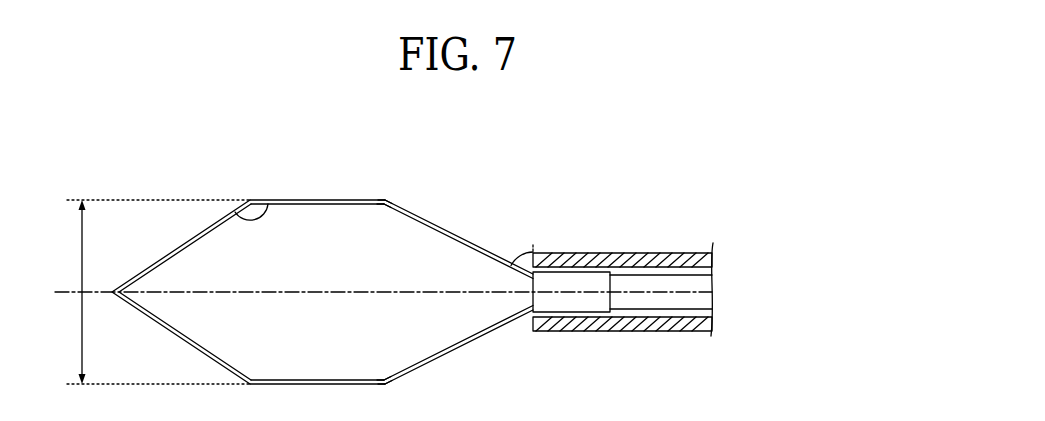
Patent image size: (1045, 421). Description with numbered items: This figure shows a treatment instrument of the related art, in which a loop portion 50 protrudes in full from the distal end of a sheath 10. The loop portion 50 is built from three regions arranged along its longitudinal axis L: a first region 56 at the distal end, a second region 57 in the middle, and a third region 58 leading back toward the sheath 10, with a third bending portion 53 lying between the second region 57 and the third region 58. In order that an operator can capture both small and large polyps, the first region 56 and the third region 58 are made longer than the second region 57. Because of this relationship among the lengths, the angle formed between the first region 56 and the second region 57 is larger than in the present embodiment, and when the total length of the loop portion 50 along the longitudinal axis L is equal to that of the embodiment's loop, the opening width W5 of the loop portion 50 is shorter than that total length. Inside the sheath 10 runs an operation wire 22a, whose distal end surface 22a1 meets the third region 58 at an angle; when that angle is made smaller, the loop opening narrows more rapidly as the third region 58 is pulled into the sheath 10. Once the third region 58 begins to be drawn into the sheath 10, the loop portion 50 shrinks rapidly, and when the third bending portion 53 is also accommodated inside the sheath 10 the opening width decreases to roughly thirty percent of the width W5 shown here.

The sheath 10 is at (681, 253).
The operation wire 22a is at (675, 303).
The distal end surface of operation wire 22a1 is at (530, 315).
The loop portion 50 is at (322, 236).
The third bending portion 53 is at (387, 202).
The first region 56 is at (187, 240).
The second region 57 is at (321, 200).
The third region 58 is at (466, 242).
The opening width W5 is at (103, 292).
The longitudinal axis L is at (262, 294).